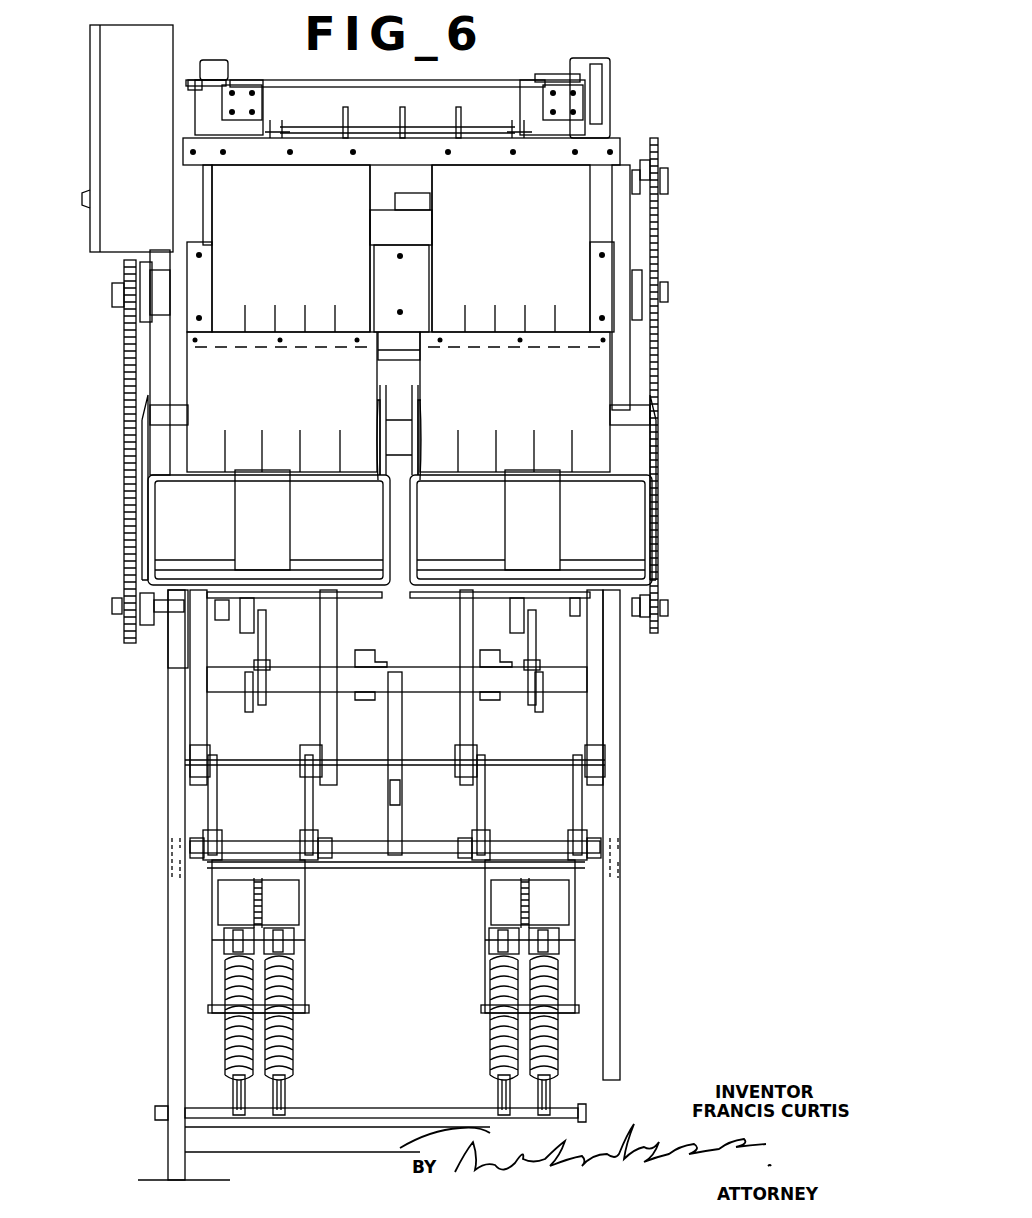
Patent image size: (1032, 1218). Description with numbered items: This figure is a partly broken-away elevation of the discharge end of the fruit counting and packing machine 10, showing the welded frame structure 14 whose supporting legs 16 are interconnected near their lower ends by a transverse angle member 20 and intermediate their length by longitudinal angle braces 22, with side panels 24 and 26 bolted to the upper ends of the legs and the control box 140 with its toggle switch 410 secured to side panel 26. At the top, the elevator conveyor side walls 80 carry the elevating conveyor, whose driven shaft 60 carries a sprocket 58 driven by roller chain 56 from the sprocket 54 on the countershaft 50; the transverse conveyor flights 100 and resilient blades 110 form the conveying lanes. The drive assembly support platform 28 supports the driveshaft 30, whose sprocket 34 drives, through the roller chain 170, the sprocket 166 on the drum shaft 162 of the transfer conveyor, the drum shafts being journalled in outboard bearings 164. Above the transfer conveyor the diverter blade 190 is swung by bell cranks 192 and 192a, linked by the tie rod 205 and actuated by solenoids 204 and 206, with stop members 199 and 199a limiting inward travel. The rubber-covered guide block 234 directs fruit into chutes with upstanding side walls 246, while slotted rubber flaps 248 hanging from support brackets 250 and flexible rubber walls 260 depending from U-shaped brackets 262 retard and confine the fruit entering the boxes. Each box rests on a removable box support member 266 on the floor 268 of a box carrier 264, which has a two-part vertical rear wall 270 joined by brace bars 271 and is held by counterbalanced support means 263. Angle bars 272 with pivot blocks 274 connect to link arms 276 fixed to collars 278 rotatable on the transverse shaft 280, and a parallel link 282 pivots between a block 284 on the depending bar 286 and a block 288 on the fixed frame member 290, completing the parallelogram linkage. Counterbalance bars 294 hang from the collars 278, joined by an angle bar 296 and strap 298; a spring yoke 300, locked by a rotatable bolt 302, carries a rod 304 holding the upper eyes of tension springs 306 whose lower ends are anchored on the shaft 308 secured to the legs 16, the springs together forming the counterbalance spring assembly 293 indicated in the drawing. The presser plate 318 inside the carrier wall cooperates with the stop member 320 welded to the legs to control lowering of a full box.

The fruit counting and packing machine 10 is at (638, 65).
The welded frame structure 14 is at (622, 905).
The supporting legs 16 is at (168, 1045).
The transverse angle member 20 is at (342, 1138).
The longitudinally extending angle brace 22 is at (170, 873).
The side panel 24 is at (632, 225).
The side panel 26 is at (172, 226).
The drive assembly support platform 28 is at (306, 688).
The driveshaft 30 is at (114, 605).
The sprocket 34 is at (125, 626).
The countershaft 50 is at (658, 605).
The sprocket 54 is at (662, 624).
The roller chain 56 is at (658, 148).
The sprocket 58 is at (662, 166).
The driven shaft 60 is at (662, 182).
The elevator conveyor side wall 80 is at (190, 72).
The transverse conveyor flight 100 is at (365, 128).
The resilient rectangular blade 110 is at (456, 114).
The control box 140 is at (152, 165).
The drum shaft 162 is at (115, 295).
The outboard bearing 164 is at (152, 250).
The sprocket 166 is at (124, 312).
The roller chain 170 is at (126, 374).
The diverter blade 190 is at (420, 198).
The bell crank 192 is at (550, 80).
The bell crank 192a is at (228, 80).
The stop member 199 is at (522, 135).
The stop member 199a is at (278, 135).
The solenoid 204 is at (586, 110).
The tie rod 205 is at (348, 86).
The solenoid 206 is at (222, 103).
The guide block 234 is at (422, 238).
The upstanding side wall 246 is at (212, 273).
The rubber flap 248 is at (312, 246).
The support bracket 250 is at (322, 166).
The flexible rubber wall 260 is at (318, 388).
The U-shaped support bracket 262 is at (275, 348).
The counterbalanced support means 263 is at (194, 712).
The box carrier 264 is at (658, 425).
The box support member 266 is at (222, 480).
The floor 268 is at (300, 580).
The vertical rear wall 270 is at (356, 513).
The brace bar 271 is at (186, 418).
The angle bar 272 is at (320, 740).
The pivot block 274 is at (190, 764).
The link arm 276 is at (305, 783).
The collar 278 is at (300, 838).
The transverse shaft 280 is at (372, 842).
The link 282 is at (264, 645).
The block 284 is at (258, 640).
The bar 286 is at (250, 600).
The block 288 is at (248, 702).
The fixed frame member 290 is at (420, 682).
The springs 293 is at (489, 1050).
The bar 294 is at (478, 888).
The angle bar 296 is at (280, 868).
The strap 298 is at (300, 1010).
The spring yoke 300 is at (292, 928).
The rotatable bolt 302 is at (262, 912).
The rod 304 is at (290, 948).
The tension spring 306 is at (232, 1072).
The shaft 308 is at (324, 1110).
The presser plate 318 is at (282, 513).
The stop member 320 is at (400, 588).
The toggle switch 410 is at (82, 198).